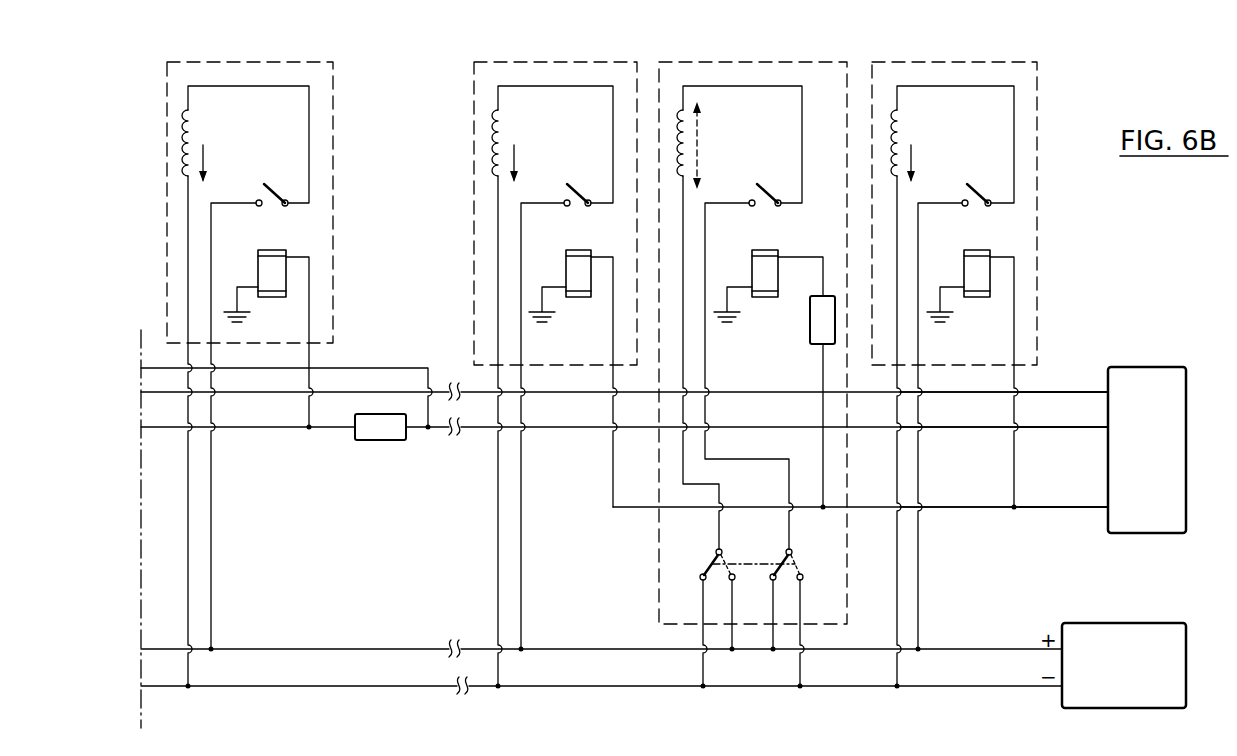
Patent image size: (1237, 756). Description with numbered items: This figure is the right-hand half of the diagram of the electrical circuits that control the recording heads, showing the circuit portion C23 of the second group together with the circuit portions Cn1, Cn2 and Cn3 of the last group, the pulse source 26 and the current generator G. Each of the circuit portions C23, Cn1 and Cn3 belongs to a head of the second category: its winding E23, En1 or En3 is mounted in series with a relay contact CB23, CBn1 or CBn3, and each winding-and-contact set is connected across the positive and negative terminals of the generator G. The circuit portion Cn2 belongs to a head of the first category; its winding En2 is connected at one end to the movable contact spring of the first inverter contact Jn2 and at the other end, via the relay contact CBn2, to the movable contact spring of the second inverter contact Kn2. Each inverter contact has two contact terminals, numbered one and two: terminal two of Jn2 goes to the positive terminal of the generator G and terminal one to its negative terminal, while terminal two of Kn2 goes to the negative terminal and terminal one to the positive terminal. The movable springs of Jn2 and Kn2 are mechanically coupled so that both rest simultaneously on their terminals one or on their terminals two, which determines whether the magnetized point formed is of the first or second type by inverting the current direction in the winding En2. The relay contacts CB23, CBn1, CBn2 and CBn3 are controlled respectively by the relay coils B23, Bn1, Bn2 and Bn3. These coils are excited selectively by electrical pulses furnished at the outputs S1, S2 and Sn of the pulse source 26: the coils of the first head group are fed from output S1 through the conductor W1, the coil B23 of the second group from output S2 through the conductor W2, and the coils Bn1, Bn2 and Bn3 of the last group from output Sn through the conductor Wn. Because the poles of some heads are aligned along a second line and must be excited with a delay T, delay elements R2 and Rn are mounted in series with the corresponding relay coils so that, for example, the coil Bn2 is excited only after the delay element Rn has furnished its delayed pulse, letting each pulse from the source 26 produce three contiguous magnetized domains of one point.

The circuit portion C23 is at (302, 37).
The winding E23 is at (194, 128).
The relay contact CB23 is at (285, 165).
The relay coil B23 is at (280, 294).
The delay element R2 is at (381, 441).
The circuit portion Cn1 is at (585, 37).
The winding En1 is at (501, 126).
The relay contact CBn1 is at (588, 165).
The relay coil Bn1 is at (584, 294).
The circuit portion Cn2 is at (805, 37).
The winding En2 is at (687, 133).
The relay contact CBn2 is at (775, 165).
The relay coil Bn2 is at (774, 294).
The delay element Rn is at (811, 333).
The first inverter contact Jn2 is at (712, 550).
The second inverter contact Kn2 is at (780, 550).
The circuit portion Cn3 is at (1012, 37).
The winding En3 is at (900, 130).
The relay contact CBn3 is at (987, 165).
The relay coil Bn3 is at (978, 294).
The conductor W1 is at (985, 390).
The conductor W2 is at (987, 424).
The conductor Wn is at (990, 503).
The output S1 is at (1064, 380).
The output S2 is at (1064, 415).
The output Sn is at (1064, 494).
The pulse source 26 is at (1153, 380).
The current generator G is at (1135, 640).